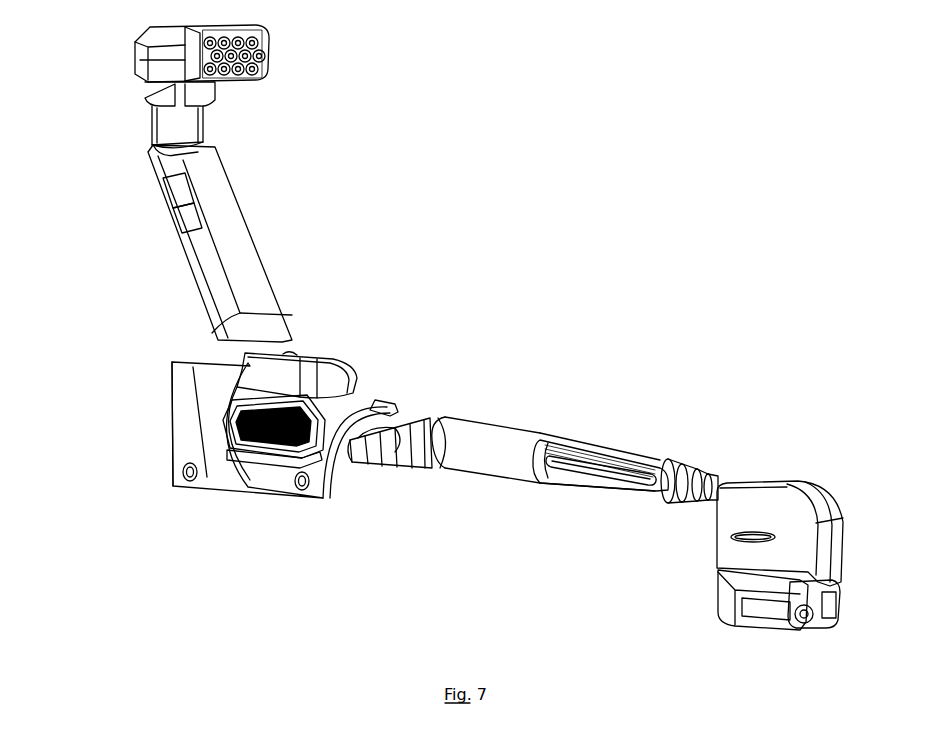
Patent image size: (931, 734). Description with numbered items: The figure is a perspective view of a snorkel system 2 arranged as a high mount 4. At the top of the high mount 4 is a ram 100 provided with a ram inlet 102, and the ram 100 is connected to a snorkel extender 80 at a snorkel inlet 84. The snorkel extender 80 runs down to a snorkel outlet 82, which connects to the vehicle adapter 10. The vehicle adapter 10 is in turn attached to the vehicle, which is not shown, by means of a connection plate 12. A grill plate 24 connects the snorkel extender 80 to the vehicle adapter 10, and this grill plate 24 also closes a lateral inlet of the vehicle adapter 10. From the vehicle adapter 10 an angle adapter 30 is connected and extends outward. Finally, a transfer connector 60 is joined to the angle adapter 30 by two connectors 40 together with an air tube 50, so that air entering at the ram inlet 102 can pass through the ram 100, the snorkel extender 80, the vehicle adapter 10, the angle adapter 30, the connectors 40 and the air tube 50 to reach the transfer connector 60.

The snorkel system 2 is at (447, 327).
The high mount 4 is at (271, 201).
The vehicle adapter 10 is at (357, 345).
The connection plate 12 is at (193, 383).
The grill plate 24 is at (270, 463).
The angle adapter 30 is at (390, 408).
The connectors 40 is at (470, 455).
The air tube 50 is at (600, 480).
The transfer connector 60 is at (828, 473).
The snorkel extender 80 is at (178, 286).
The snorkel outlet 82 is at (278, 372).
The snorkel inlet 84 is at (158, 112).
The ram 100 is at (125, 69).
The ram inlet 102 is at (305, 60).